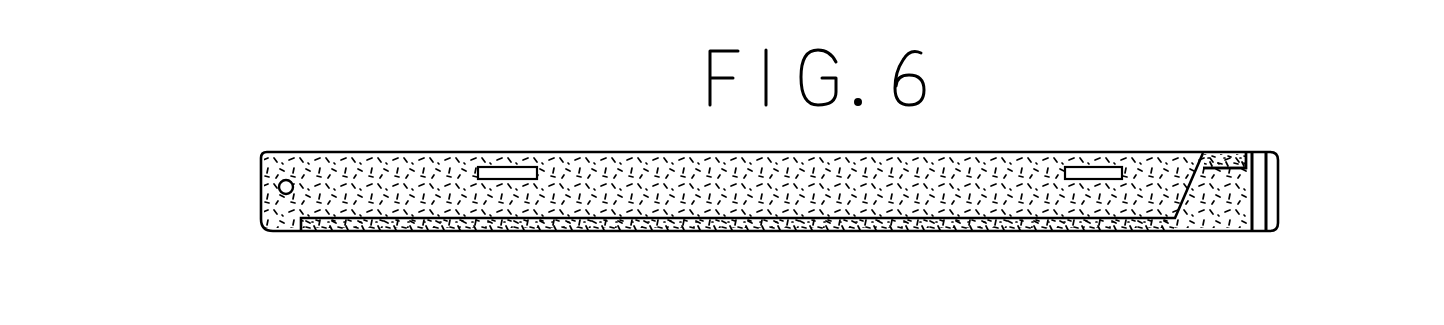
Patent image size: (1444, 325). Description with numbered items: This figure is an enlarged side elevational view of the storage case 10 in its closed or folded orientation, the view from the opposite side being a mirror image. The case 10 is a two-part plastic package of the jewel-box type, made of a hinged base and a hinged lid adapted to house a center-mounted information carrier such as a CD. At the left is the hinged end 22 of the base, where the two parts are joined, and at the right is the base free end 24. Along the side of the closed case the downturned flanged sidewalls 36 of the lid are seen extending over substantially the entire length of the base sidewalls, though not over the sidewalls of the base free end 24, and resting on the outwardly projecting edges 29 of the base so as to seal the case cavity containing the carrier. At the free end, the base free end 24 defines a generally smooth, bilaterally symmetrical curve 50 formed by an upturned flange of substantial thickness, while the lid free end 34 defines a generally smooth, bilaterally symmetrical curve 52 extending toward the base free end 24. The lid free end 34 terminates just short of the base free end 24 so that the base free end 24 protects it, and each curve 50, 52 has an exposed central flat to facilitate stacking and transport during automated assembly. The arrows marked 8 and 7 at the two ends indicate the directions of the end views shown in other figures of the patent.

The storage case 10 is at (466, 136).
The hinged end 22 is at (262, 170).
The outwardly projecting edges 29 is at (530, 231).
The downturned flanged sidewalls 36 is at (660, 182).
The lid free end 34 is at (1247, 161).
The bilaterally symmetrical curve 52 is at (1251, 125).
The base free end 24 is at (1280, 207).
The bilaterally symmetrical curve 50 is at (1301, 224).
The section line for FIG. 8 is at (210, 189).
The section line for FIG. 7 is at (1307, 184).